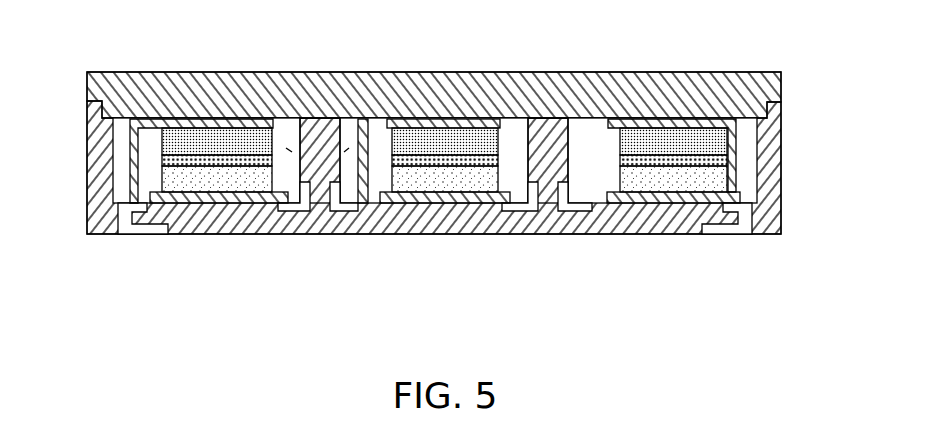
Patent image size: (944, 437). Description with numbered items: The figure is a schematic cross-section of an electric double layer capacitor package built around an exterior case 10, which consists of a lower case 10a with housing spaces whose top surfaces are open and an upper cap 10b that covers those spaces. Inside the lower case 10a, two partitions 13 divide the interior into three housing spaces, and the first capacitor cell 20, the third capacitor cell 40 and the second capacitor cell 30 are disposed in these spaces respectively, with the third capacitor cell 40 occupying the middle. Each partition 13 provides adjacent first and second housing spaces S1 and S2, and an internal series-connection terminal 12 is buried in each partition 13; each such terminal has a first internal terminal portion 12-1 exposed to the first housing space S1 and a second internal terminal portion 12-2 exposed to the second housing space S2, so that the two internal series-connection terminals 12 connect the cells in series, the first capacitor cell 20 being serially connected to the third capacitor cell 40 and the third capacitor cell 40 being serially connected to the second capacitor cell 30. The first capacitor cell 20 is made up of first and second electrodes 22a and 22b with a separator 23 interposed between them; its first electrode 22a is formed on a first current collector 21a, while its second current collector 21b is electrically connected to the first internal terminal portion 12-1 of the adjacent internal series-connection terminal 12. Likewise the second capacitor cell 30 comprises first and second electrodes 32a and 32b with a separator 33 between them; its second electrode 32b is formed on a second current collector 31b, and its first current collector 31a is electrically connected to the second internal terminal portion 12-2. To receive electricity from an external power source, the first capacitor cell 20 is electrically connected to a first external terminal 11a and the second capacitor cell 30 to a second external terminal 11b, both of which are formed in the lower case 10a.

The exterior case 10 is at (858, 78).
The lower case 10a is at (782, 118).
The upper cap 10b is at (782, 84).
The first external terminal 11a is at (142, 234).
The second external terminal 11b is at (742, 234).
The internal series-connection terminal 12 is at (429, 260).
The first internal terminal portion 12-1 is at (291, 212).
The second internal terminal portion 12-2 is at (433, 230).
The partition 13 is at (321, 150).
The first capacitor cell 20 is at (164, 209).
The first current collector 21a is at (140, 129).
The second current collector 21b is at (158, 196).
The first electrode 22a is at (168, 138).
The second electrode 22b is at (168, 178).
The separator 23 is at (168, 160).
The second capacitor cell 30 is at (747, 213).
The first current collector 31a is at (745, 127).
The second current collector 31b is at (737, 198).
The first electrode 32a is at (727, 138).
The second electrode 32b is at (727, 178).
The separator 33 is at (727, 158).
The third capacitor cell 40 is at (442, 197).
The first housing space S1 is at (286, 148).
The second housing space S2 is at (349, 148).